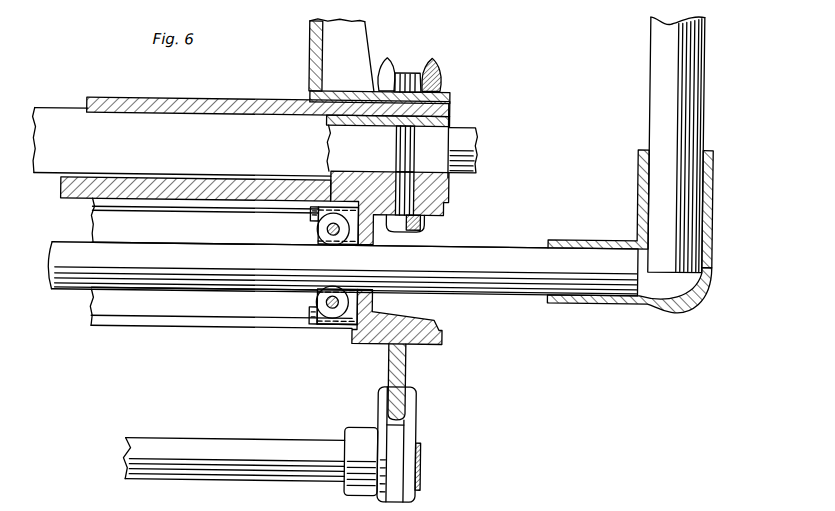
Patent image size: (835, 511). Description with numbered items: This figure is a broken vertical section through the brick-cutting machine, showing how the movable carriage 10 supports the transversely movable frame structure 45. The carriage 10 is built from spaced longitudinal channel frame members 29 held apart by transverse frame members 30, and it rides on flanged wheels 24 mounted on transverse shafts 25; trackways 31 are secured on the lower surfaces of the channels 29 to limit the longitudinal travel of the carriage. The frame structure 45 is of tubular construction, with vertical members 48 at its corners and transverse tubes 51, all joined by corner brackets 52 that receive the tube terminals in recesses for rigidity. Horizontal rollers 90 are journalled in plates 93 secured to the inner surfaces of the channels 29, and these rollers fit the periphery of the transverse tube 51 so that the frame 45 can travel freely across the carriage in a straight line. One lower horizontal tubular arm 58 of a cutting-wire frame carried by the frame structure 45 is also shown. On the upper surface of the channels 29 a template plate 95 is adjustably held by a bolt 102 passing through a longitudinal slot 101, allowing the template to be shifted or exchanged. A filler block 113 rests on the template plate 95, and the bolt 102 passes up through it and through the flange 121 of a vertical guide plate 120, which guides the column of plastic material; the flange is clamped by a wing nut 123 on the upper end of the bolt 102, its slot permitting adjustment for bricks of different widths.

The movable frame or carriage 10 is at (457, 196).
The flanged wheel 24 is at (421, 420).
The transverse shaft 25 is at (242, 444).
The longitudinal frame member 29 is at (432, 321).
The transverse frame member 30 is at (229, 331).
The trackway 31 is at (412, 372).
The frame structure 45 is at (706, 109).
The vertical member 48 is at (702, 63).
The lower transverse member 51 is at (542, 296).
The corner bracket 52 is at (690, 307).
The lower horizontal tubular arm 58 is at (470, 133).
The horizontal roller 90 is at (326, 230).
The plate 93 is at (340, 333).
The template plate 95 is at (66, 197).
The longitudinal slot 101 is at (421, 228).
The bolt 102 is at (395, 150).
The filler block 113 is at (52, 115).
The vertical guide plate 120 is at (307, 63).
The flange 121 is at (447, 93).
The wing nut 123 is at (430, 70).